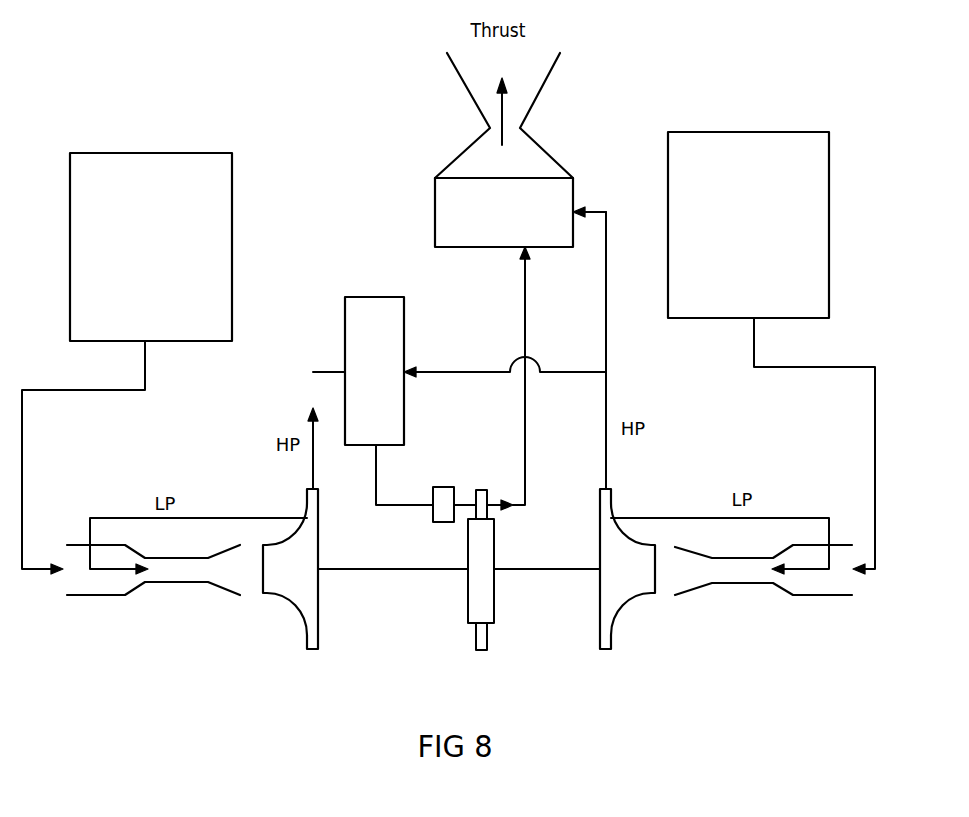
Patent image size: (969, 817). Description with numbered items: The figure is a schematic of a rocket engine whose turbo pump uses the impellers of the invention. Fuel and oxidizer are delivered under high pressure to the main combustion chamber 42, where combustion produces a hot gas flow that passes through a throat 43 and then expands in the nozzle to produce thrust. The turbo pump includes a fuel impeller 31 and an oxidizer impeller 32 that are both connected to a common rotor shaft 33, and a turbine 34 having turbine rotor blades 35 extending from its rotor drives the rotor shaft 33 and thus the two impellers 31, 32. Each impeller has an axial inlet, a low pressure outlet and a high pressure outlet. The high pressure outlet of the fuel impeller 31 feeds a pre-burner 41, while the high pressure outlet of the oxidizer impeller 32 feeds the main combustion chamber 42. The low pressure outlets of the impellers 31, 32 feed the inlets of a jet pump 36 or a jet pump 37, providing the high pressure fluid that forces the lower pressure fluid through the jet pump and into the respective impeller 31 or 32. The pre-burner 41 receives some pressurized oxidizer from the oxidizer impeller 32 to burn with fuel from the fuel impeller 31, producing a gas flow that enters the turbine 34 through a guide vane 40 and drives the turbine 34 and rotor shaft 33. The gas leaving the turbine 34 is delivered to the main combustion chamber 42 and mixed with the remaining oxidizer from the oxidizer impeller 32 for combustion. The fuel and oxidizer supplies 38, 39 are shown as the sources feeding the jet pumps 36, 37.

The fuel impeller 31 is at (306, 585).
The oxidizer impeller 32 is at (628, 582).
The rotor shaft 33 is at (356, 569).
The turbine 34 is at (483, 585).
The turbine rotor blades 35 is at (485, 637).
The jet pump 36 is at (172, 570).
The jet pump 37 is at (745, 570).
The fuel tank 38 is at (118, 215).
The oxidizer tank 39 is at (780, 203).
The guide vane 40 is at (440, 517).
The pre-burner 41 is at (366, 312).
The main combustion chamber 42 is at (452, 212).
The throat 43 is at (488, 128).